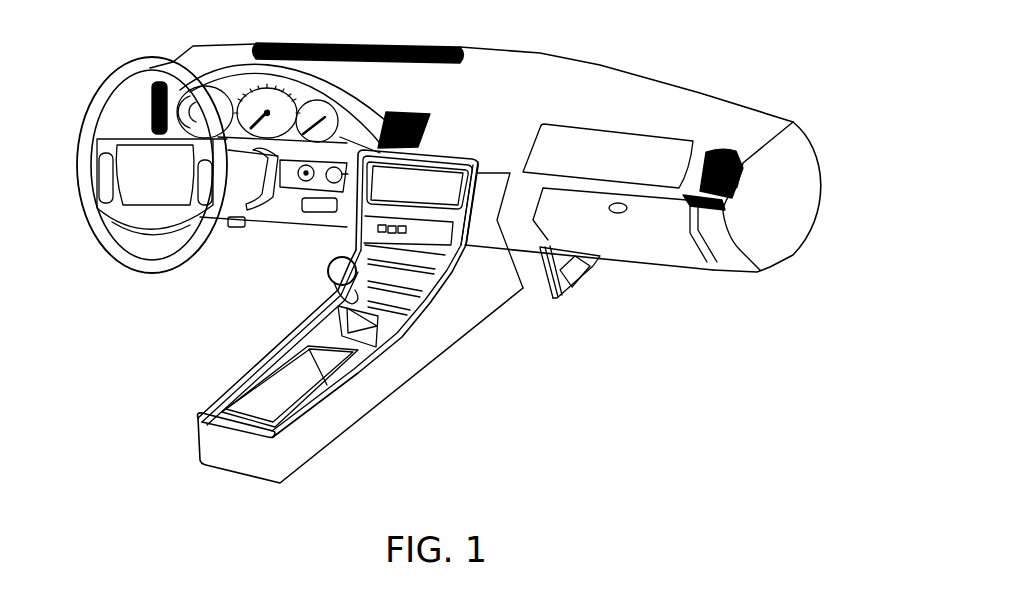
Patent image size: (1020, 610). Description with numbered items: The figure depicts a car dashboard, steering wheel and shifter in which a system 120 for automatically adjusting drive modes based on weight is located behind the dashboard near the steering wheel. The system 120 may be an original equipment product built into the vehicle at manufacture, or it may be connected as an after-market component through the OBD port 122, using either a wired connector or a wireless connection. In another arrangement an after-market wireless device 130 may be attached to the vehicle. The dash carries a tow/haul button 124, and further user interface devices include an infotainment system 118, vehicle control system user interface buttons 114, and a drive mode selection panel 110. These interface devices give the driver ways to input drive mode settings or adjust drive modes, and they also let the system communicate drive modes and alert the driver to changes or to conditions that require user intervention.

The drive mode selection panel 110 is at (453, 170).
The vehicle control system user interface buttons 114 is at (350, 232).
The infotainment system 118 is at (427, 257).
The system for automatically adjusting drive modes based on weight 120 is at (290, 223).
The OBD port 122 is at (232, 236).
The tow/haul button 124 is at (430, 150).
The after-market wireless device 130 is at (597, 268).